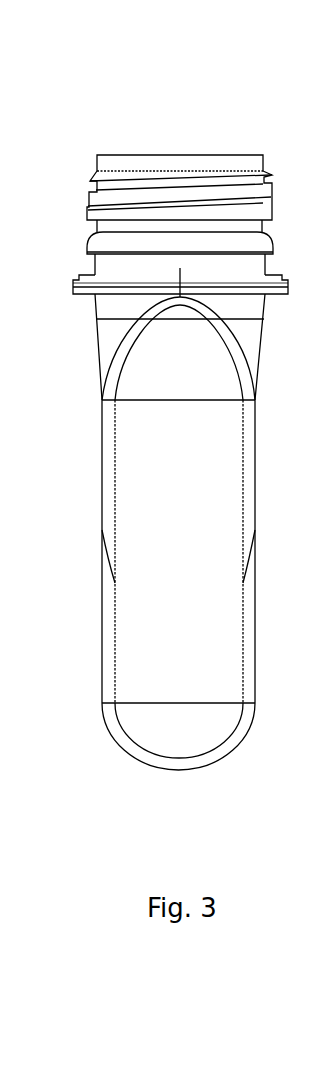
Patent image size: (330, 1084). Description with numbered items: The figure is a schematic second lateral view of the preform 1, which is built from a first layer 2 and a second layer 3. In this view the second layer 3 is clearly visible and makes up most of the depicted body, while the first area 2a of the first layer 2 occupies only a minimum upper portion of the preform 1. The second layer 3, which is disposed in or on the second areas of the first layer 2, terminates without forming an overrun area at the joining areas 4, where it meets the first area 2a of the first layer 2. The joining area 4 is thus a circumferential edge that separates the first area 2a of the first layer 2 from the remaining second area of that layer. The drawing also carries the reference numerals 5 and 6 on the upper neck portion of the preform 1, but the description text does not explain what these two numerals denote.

The preform 1 is at (258, 134).
The threaded neck finish 5 is at (273, 202).
The first layer 2 is at (286, 241).
The flange 6 is at (282, 288).
The first area of the first layer 2a is at (255, 345).
The second layer 3 is at (220, 503).
The joining areas 4 is at (108, 563).